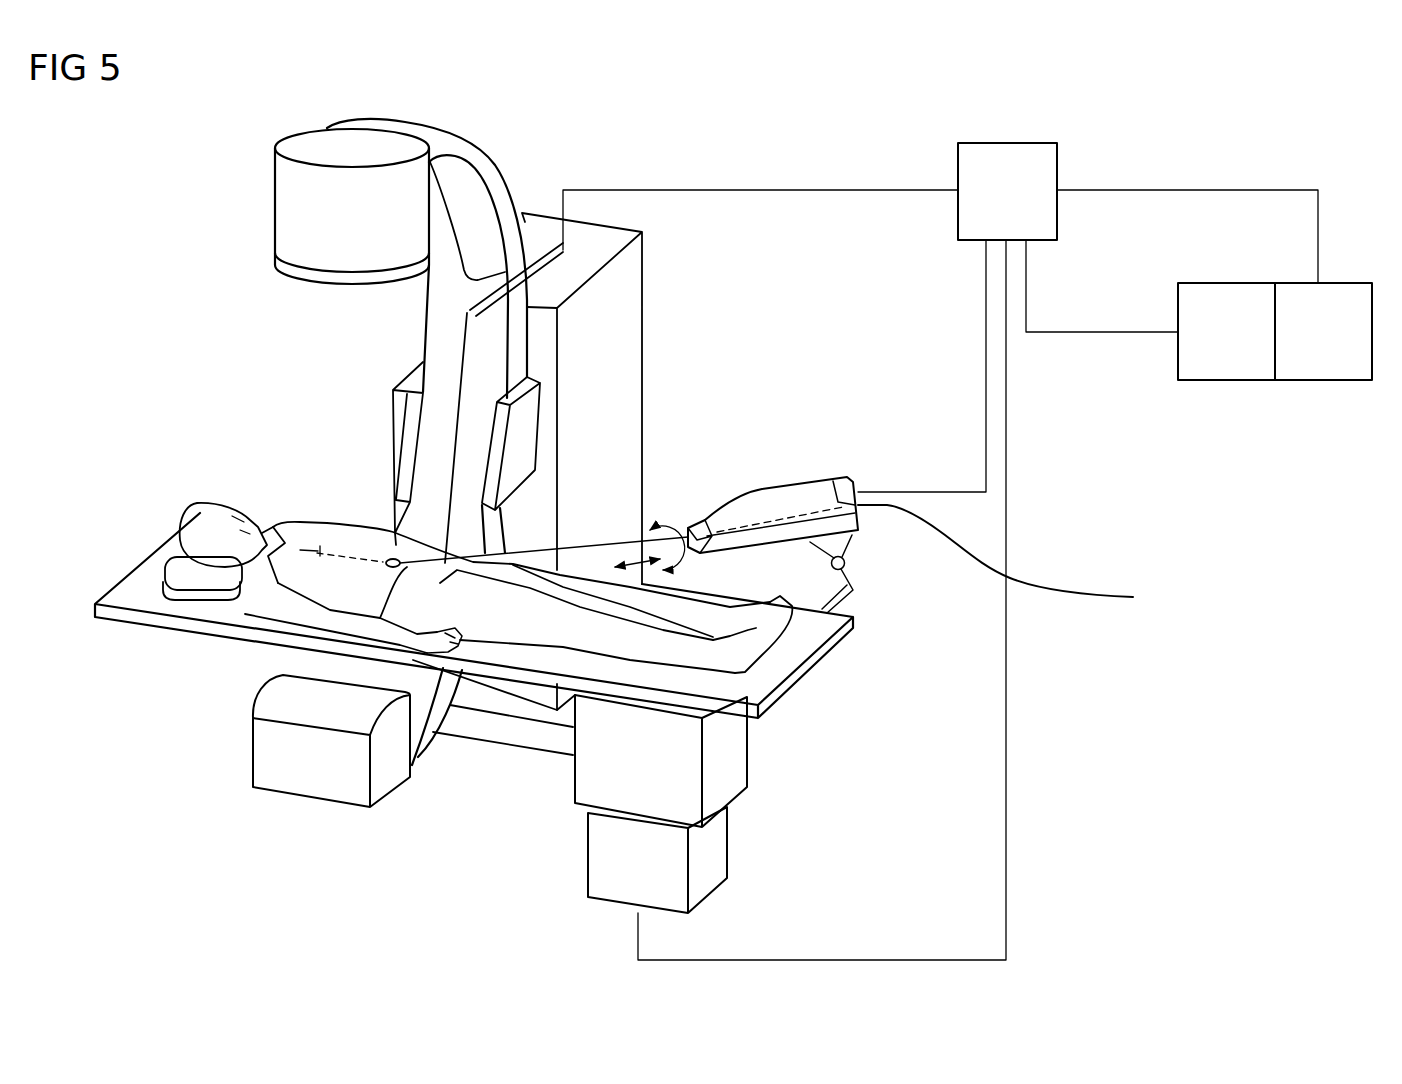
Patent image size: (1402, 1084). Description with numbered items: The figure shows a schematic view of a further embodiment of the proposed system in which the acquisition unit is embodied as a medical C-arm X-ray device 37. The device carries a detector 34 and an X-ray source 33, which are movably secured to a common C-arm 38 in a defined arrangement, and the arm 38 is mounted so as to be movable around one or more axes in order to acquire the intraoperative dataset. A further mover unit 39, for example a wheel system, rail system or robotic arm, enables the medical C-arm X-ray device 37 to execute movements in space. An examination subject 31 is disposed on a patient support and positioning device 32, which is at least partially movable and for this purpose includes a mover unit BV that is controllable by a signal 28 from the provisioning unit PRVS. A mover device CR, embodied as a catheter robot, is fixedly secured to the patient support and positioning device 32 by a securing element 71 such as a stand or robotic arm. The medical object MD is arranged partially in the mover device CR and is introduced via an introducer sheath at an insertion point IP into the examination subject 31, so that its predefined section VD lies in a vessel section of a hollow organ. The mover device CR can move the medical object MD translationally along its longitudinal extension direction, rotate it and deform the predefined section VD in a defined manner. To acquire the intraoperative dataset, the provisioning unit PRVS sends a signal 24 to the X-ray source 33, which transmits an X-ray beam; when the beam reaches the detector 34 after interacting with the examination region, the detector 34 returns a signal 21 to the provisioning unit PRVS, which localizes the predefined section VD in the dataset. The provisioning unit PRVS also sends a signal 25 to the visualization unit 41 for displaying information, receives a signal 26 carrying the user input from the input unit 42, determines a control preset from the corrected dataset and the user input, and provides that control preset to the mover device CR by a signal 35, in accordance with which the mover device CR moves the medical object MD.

The signal 21 is at (450, 197).
The signal 24 is at (465, 322).
The signal 25 is at (1105, 333).
The signal 26 is at (1222, 188).
The signal 28 is at (1008, 690).
The examination subject 31 is at (243, 477).
The patient support and positioning device 32 is at (118, 620).
The X-ray source 33 is at (305, 785).
The detector 34 is at (290, 216).
The signal 35 is at (927, 492).
The medical C-arm X-ray device 37 is at (290, 122).
The C-arm 38 is at (512, 192).
The further mover unit 39 is at (507, 737).
The visualization unit 41 is at (1222, 381).
The input unit 42 is at (1320, 381).
The securing element 71 is at (852, 580).
The mover device CR is at (785, 480).
The medical object MD is at (1085, 590).
The provisioning unit PRVS is at (1057, 217).
The mover unit BV is at (708, 878).
The insertion point IP is at (388, 548).
The predefined section VD is at (308, 548).